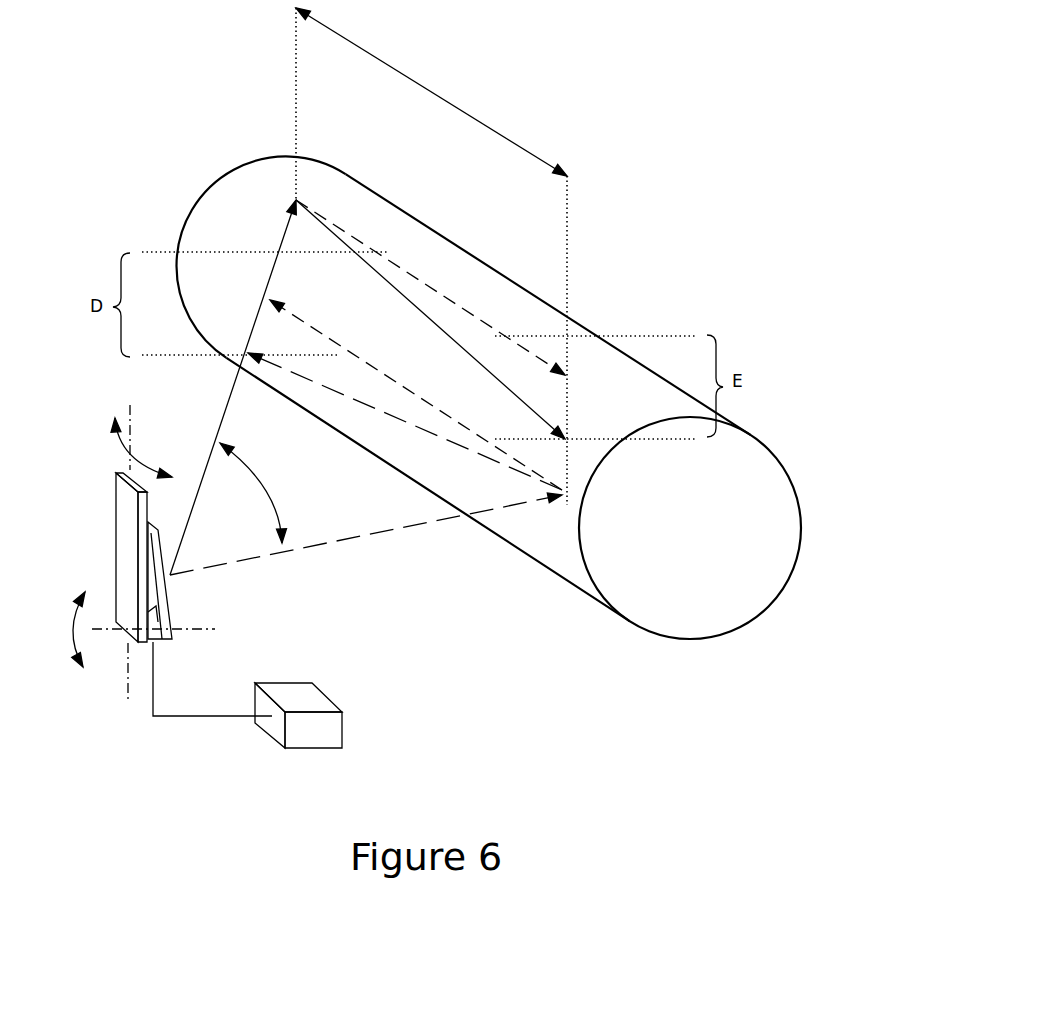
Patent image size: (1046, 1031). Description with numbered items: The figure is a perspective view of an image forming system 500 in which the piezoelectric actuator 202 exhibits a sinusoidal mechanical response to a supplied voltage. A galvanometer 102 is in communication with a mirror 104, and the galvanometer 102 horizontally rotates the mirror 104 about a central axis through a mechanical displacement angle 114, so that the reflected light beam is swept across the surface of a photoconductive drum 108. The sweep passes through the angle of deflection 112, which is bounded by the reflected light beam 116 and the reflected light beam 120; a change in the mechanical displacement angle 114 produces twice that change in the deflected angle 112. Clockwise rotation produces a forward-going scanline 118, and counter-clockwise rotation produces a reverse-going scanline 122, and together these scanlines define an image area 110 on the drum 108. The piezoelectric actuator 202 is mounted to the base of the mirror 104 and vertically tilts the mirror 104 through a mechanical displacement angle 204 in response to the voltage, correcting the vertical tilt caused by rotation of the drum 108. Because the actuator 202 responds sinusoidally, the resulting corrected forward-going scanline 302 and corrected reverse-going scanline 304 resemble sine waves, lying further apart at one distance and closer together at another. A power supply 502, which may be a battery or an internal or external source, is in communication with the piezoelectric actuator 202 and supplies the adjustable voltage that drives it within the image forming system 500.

The galvanometer 102 is at (116, 520).
The mirror 104 is at (167, 645).
The photoconductive drum 108 is at (755, 435).
The image area 110 is at (328, 22).
The angle of deflection 112 is at (250, 468).
The mechanical displacement angle 114 is at (127, 448).
The reflected light beam 116 is at (220, 415).
The forward-going scanline 118 is at (377, 279).
The reflected light beam 120 is at (382, 530).
The reverse-going scanline 122 is at (480, 453).
The piezoelectric actuator 202 is at (153, 643).
The mechanical displacement angle 204 is at (75, 620).
The corrected forward-going scanline 302 is at (427, 285).
The corrected reverse-going scanline 304 is at (393, 387).
The image forming system 500 is at (685, 105).
The power supply 502 is at (285, 682).